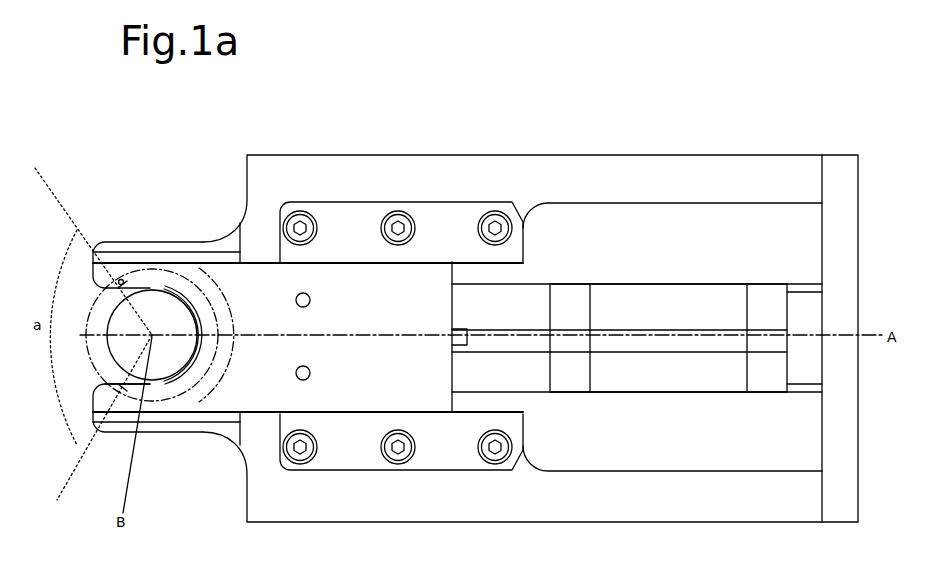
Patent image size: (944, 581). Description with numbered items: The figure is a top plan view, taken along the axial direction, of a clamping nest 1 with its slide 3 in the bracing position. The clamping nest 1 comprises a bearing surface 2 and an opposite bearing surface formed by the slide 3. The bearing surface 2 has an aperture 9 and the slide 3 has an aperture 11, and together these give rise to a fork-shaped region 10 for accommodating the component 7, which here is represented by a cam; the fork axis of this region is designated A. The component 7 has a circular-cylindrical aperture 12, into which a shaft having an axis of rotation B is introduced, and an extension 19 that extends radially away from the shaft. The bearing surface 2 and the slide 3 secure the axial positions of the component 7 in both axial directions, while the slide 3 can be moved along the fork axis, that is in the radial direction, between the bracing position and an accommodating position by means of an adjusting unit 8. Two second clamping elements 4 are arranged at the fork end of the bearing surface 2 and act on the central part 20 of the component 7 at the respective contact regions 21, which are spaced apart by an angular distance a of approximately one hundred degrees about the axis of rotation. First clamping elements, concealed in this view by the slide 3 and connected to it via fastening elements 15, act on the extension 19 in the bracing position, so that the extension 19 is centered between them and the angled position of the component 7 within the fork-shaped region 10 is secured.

The clamping nest 1 is at (151, 131).
The bearing surface 2 is at (122, 283).
The slide 3 is at (362, 303).
The second clamping elements 4 is at (112, 280).
The component 7 is at (105, 322).
The adjusting unit 8 is at (650, 305).
The aperture 9 is at (185, 300).
The fork-shaped region 10 is at (118, 247).
The aperture 11 is at (200, 363).
The circular-cylindrical aperture 12 is at (172, 360).
The fastening elements 15 is at (302, 366).
The extension 19 is at (220, 352).
The central part 20 is at (107, 367).
The contact regions 21 is at (120, 280).